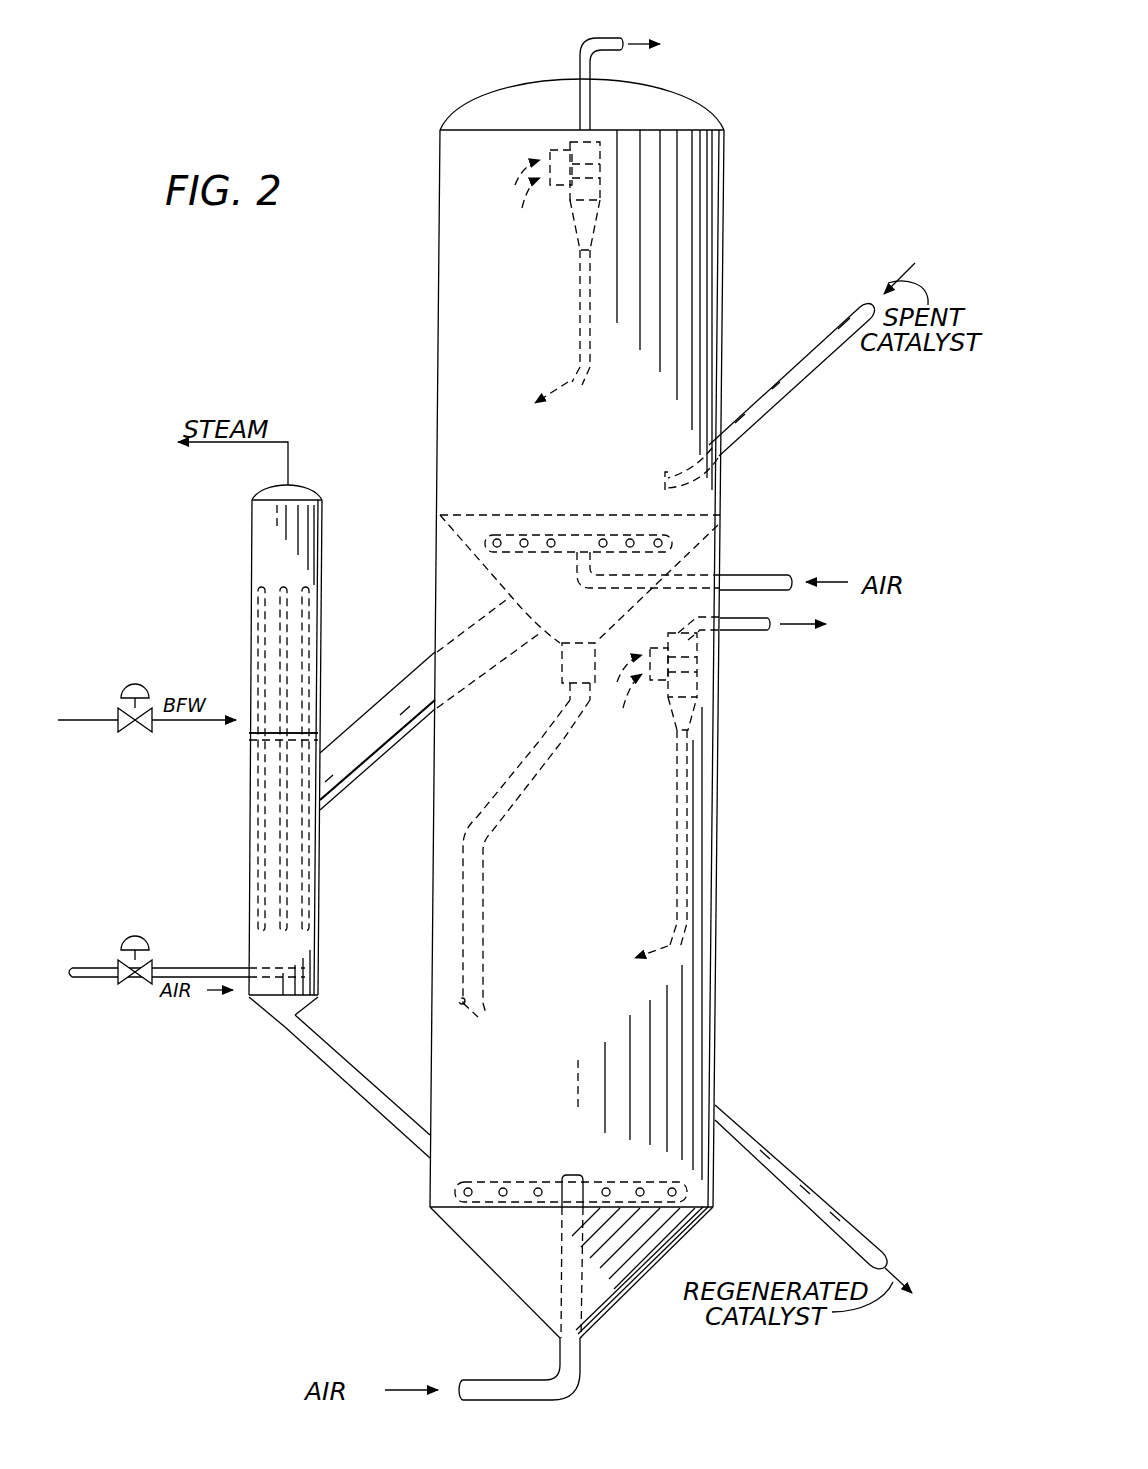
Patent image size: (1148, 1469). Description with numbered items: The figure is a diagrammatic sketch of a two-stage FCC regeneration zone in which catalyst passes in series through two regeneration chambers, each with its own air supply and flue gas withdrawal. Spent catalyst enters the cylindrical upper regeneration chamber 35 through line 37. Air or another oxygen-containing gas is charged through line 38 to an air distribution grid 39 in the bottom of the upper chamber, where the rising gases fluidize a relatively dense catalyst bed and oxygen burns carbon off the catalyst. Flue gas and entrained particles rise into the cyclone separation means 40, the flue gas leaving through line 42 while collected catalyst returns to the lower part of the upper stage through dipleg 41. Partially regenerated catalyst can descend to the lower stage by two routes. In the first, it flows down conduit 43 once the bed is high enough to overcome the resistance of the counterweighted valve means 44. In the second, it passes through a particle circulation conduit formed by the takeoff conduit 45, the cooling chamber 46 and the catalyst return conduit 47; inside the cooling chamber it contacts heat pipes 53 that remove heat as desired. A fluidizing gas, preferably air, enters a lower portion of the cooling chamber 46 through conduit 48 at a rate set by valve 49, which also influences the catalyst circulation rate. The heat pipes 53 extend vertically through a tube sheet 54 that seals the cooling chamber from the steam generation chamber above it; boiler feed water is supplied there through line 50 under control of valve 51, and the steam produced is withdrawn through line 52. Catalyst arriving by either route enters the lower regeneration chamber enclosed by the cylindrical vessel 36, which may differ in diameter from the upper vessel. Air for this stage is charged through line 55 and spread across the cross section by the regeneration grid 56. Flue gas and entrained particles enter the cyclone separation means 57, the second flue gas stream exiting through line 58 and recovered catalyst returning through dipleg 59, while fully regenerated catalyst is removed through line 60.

The upper regeneration chamber 35 is at (729, 227).
The cylindrical vessel 36 is at (721, 1011).
The line 37 is at (806, 378).
The line 38 is at (748, 574).
The air distribution grid 39 is at (546, 534).
The cyclone separation means 40 is at (560, 196).
The dipleg 41 is at (578, 296).
The line 42 is at (583, 38).
The conduit 43 is at (500, 778).
The counterweighted valve means 44 is at (478, 1010).
The takeoff conduit 45 is at (428, 680).
The cooling chamber 46 is at (250, 840).
The catalyst return conduit 47 is at (340, 1078).
The conduit 48 is at (183, 968).
The valve 49 is at (135, 985).
The line 50 is at (225, 722).
The valve 51 is at (135, 732).
The line 52 is at (262, 445).
The heat pipes 53 is at (268, 620).
The tube sheet 54 is at (305, 735).
The line 55 is at (575, 1383).
The regeneration grid 56 is at (528, 1180).
The cyclone separation means 57 is at (712, 672).
The line 58 is at (748, 615).
The dipleg 59 is at (693, 847).
The line 60 is at (815, 1197).